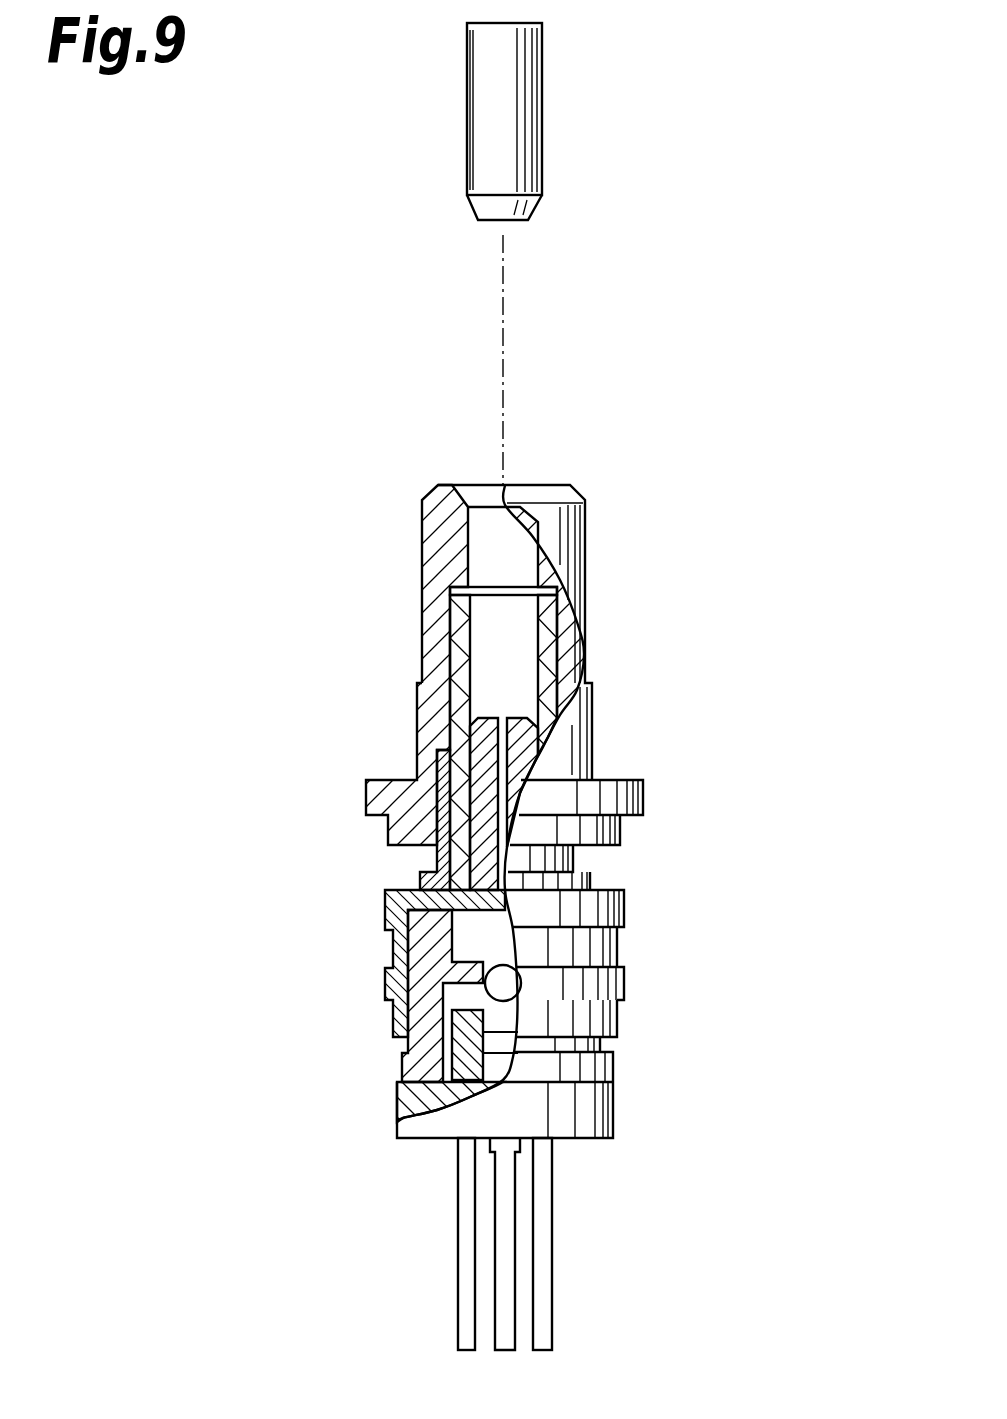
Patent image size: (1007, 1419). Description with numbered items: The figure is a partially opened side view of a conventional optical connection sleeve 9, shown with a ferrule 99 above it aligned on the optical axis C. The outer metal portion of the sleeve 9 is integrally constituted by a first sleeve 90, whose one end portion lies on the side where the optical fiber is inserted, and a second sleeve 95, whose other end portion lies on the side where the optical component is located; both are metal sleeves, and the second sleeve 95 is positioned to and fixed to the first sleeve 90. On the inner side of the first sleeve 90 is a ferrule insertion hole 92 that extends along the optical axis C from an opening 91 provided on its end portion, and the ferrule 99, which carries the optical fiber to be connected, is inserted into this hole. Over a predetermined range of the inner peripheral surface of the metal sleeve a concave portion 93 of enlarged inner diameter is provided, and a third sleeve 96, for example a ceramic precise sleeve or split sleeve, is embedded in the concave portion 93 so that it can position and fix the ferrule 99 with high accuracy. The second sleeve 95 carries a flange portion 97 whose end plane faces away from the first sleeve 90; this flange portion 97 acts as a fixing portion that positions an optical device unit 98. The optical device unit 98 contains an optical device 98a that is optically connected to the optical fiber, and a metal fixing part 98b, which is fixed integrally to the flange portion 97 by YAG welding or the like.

The optical connection sleeve 9 is at (612, 493).
The ferrule 99 is at (510, 130).
The optical axis C is at (503, 350).
The opening 91 is at (478, 485).
The ferrule insertion hole 92 is at (483, 543).
The concave portion 93 is at (447, 693).
The first sleeve 90 is at (560, 605).
The second sleeve 95 is at (442, 862).
The third sleeve 96 is at (582, 655).
The flange portion 97 is at (590, 880).
The optical device unit 98 is at (644, 890).
The optical device 98a is at (497, 1045).
The fixing part 98b is at (383, 902).